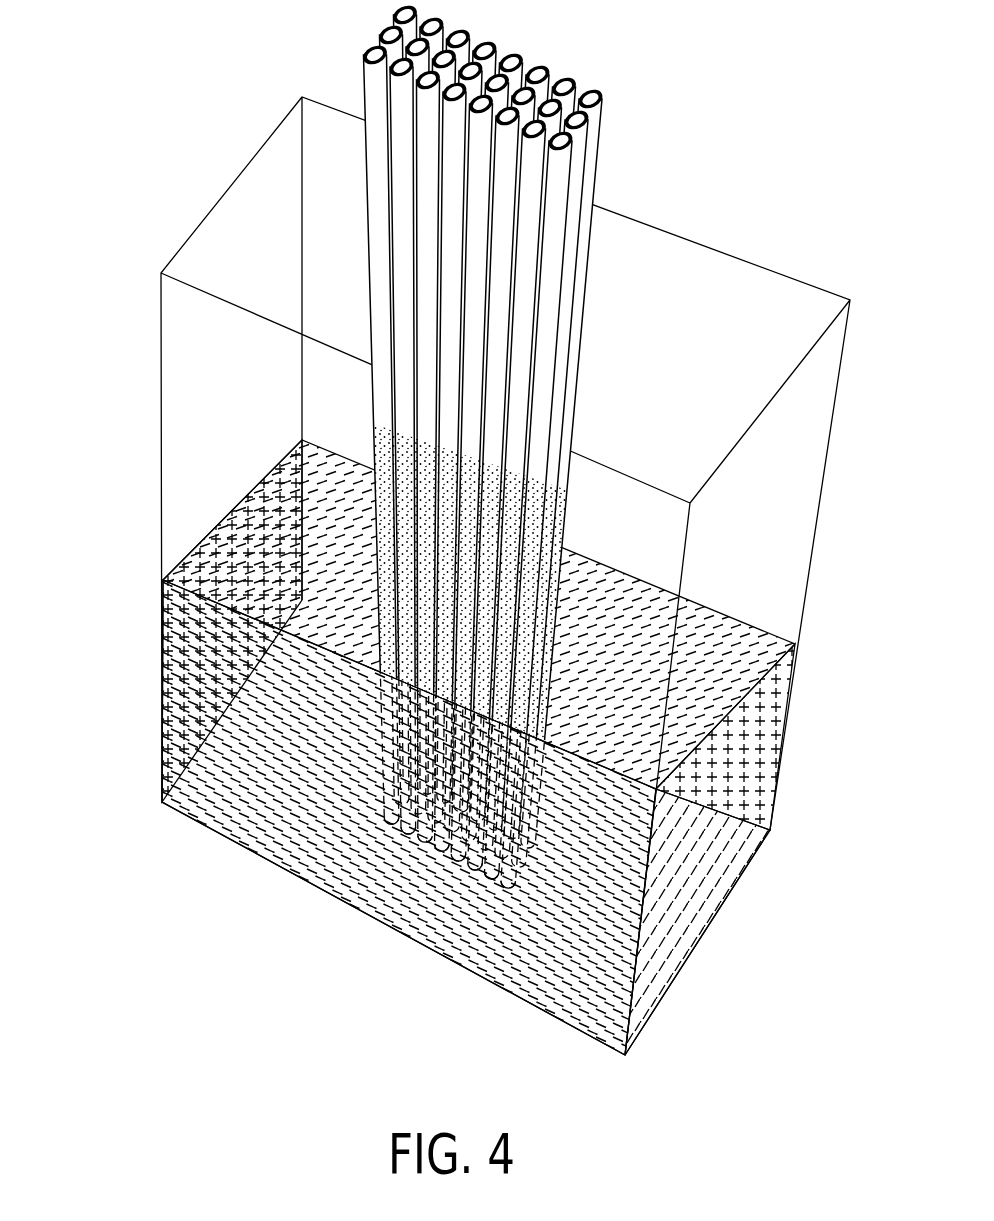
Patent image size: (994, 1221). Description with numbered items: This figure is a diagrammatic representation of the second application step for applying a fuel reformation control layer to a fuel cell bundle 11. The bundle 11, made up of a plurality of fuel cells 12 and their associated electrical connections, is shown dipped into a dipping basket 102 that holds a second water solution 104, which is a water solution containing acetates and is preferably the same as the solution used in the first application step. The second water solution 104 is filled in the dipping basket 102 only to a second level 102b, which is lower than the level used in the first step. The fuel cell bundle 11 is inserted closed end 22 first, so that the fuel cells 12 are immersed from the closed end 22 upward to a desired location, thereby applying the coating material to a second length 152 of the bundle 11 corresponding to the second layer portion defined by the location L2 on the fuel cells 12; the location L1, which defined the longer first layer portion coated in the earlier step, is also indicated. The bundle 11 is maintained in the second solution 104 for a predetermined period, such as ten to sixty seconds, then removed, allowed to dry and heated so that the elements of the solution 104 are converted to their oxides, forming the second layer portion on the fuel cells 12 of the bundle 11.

The fuel cell bundle 11 is at (618, 100).
The fuel cells 12 is at (373, 86).
The closed end 22 is at (390, 826).
The dipping basket 102 is at (127, 402).
The second level 102b is at (788, 700).
The second water solution 104 is at (590, 747).
The second length 152 is at (375, 618).
The location L1 is at (578, 494).
The location L2 is at (381, 603).